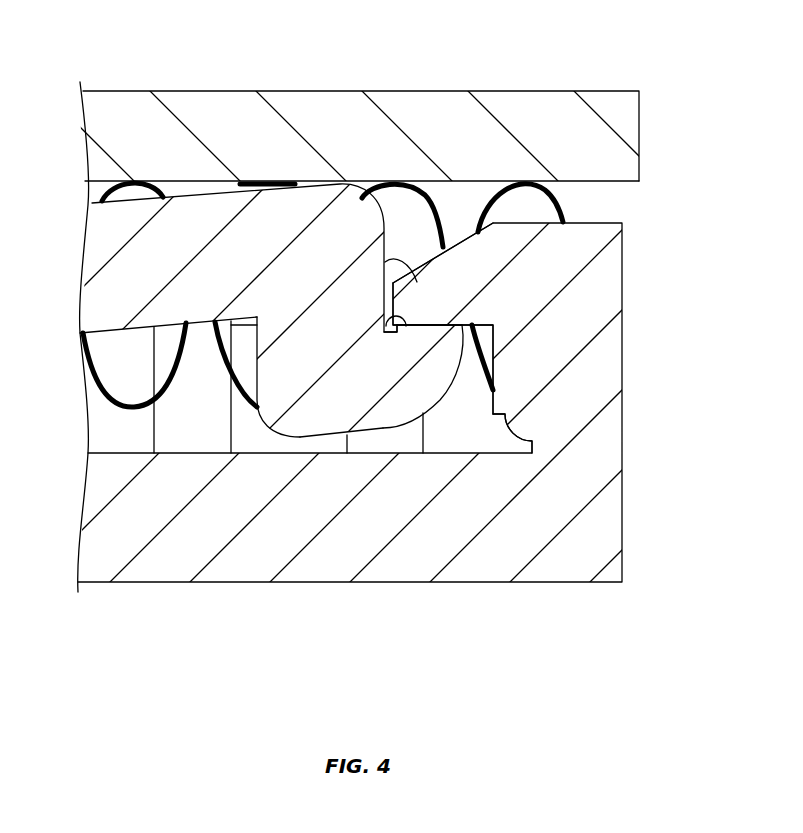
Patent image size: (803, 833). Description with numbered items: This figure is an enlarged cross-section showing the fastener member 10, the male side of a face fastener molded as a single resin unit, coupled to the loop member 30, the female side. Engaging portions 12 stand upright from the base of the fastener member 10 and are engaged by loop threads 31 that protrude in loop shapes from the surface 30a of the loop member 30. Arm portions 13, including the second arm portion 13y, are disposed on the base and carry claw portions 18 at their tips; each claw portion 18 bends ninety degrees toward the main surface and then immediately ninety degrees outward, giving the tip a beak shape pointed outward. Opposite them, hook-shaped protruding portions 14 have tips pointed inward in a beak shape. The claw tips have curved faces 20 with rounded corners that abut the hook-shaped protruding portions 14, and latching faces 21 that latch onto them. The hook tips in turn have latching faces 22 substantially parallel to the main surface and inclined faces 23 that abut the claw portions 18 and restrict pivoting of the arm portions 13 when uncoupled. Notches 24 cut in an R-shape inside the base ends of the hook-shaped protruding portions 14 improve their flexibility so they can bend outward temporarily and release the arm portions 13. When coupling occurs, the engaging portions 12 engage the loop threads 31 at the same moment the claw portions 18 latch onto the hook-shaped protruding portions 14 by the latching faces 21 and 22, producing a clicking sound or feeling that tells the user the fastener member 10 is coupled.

The fastener member 10 is at (401, 353).
The engaging portions 12 is at (144, 428).
The arm portions 13 is at (339, 418).
The second arm portion 13y is at (112, 188).
The hook-shaped protruding portions 14 is at (632, 261).
The claw portions 18 is at (322, 447).
The curved faces 20 is at (450, 388).
The latching faces 21 is at (386, 324).
The latching faces 22 is at (465, 327).
The inclined faces 23 is at (456, 243).
The notches 24 is at (532, 441).
The loop member 30 is at (327, 84).
The surface 30a is at (613, 182).
The loop threads 31 is at (558, 200).